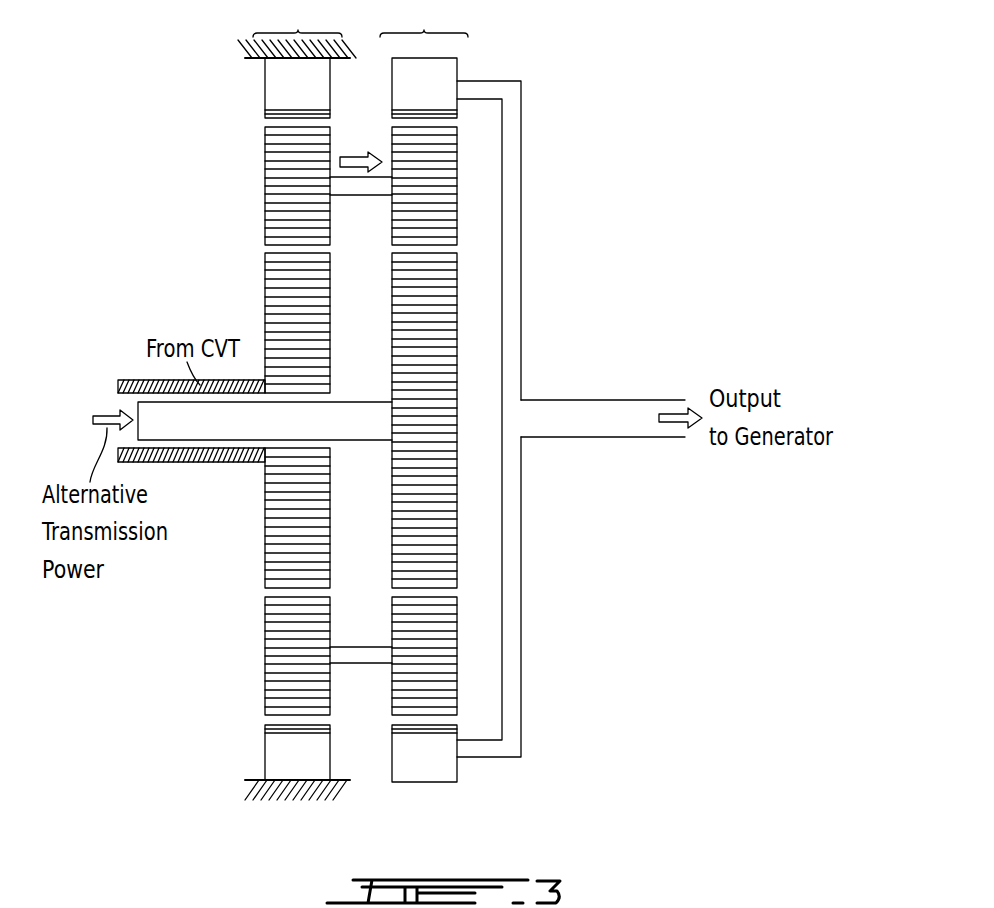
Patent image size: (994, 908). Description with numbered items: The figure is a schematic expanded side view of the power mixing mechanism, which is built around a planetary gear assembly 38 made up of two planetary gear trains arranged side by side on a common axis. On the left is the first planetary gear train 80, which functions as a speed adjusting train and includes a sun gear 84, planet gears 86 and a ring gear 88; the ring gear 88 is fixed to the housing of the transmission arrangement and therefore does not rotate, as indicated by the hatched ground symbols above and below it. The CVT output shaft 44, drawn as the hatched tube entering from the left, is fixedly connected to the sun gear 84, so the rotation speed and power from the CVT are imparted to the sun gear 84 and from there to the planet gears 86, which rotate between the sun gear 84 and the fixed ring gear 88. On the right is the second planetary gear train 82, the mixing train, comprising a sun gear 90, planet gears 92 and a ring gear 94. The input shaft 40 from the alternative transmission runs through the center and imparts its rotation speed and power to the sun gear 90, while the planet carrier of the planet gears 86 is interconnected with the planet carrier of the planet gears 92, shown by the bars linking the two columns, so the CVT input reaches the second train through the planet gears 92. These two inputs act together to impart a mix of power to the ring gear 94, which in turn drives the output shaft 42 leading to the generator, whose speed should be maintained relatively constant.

The planetary gear assembly 38 is at (545, 95).
The input shaft 40 is at (96, 419).
The output shaft 42 is at (583, 414).
The CVT output shaft 44 is at (135, 383).
The first planetary gear train 80 is at (297, 400).
The second planetary gear train 82 is at (424, 19).
The sun gear 84 is at (265, 317).
The planet gears 86 is at (265, 187).
The ring gear 88 is at (265, 92).
The sun gear 90 is at (457, 320).
The planet gears 92 is at (457, 185).
The ring gear 94 is at (458, 67).